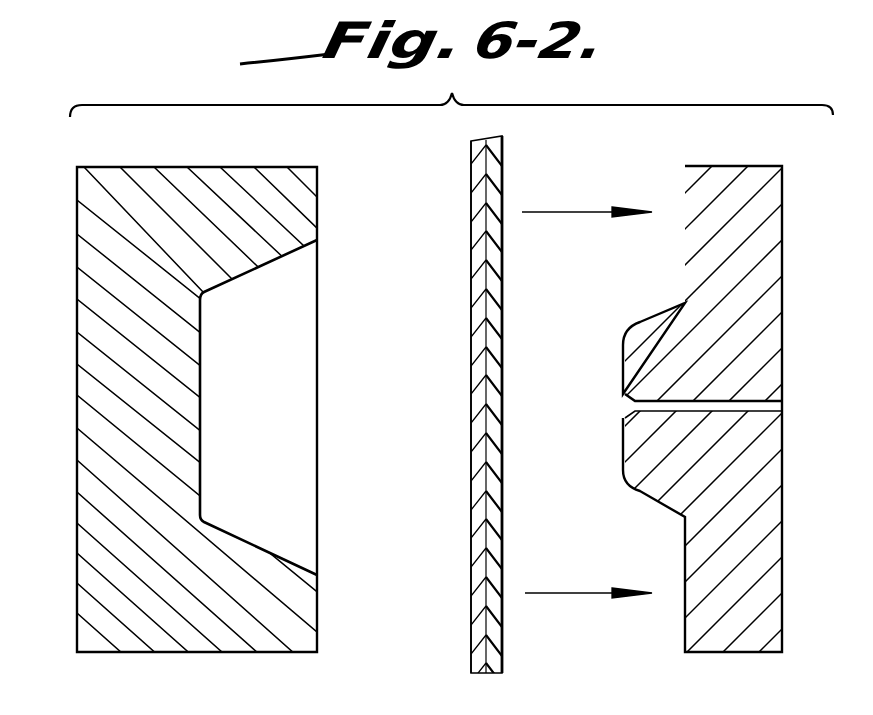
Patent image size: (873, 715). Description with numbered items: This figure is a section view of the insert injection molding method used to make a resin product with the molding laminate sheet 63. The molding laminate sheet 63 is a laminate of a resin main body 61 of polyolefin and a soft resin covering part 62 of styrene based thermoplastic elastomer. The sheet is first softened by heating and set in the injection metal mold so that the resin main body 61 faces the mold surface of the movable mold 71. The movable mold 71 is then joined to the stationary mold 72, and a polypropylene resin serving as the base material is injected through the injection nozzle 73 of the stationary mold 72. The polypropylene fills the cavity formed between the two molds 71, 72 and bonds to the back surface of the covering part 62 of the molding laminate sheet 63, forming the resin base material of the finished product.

The resin main body 61 is at (478, 347).
The soft resin covering part 62 is at (495, 372).
The molding laminate sheet 63 is at (471, 293).
The movable mold 71 is at (77, 226).
The stationary mold 72 is at (772, 298).
The injection nozzle 73 is at (763, 413).